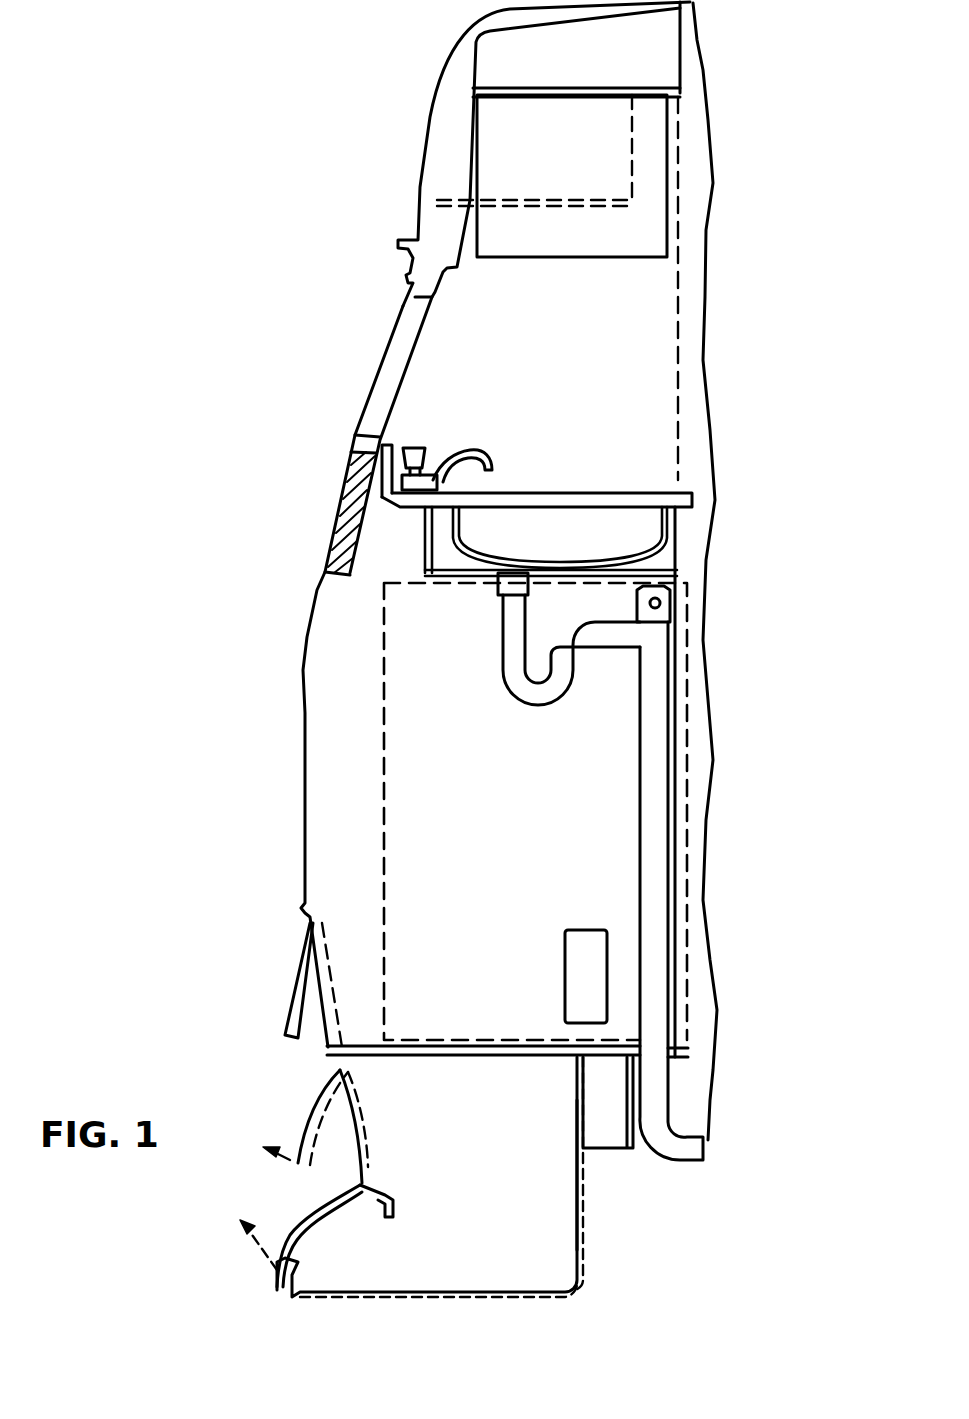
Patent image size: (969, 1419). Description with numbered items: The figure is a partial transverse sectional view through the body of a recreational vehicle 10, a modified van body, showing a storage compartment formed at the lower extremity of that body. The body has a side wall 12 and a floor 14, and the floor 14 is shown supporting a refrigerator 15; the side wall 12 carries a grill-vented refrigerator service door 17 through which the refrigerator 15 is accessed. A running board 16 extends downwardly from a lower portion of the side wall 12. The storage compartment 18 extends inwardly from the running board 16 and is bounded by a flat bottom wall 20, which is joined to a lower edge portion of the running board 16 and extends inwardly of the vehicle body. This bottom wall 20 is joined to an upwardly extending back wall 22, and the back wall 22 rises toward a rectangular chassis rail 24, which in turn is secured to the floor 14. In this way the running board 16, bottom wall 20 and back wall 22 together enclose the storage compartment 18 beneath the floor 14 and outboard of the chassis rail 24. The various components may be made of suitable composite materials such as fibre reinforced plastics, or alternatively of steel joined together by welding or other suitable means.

The recreational vehicle 10 is at (360, 328).
The side wall 12 is at (308, 633).
The floor 14 is at (478, 1043).
The refrigerator 15 is at (384, 790).
The running board 16 is at (290, 1205).
The refrigerator service door 17 is at (293, 992).
The storage compartment 18 is at (470, 1177).
The bottom wall 20 is at (443, 1288).
The back wall 22 is at (577, 1243).
The chassis rail 24 is at (607, 1152).